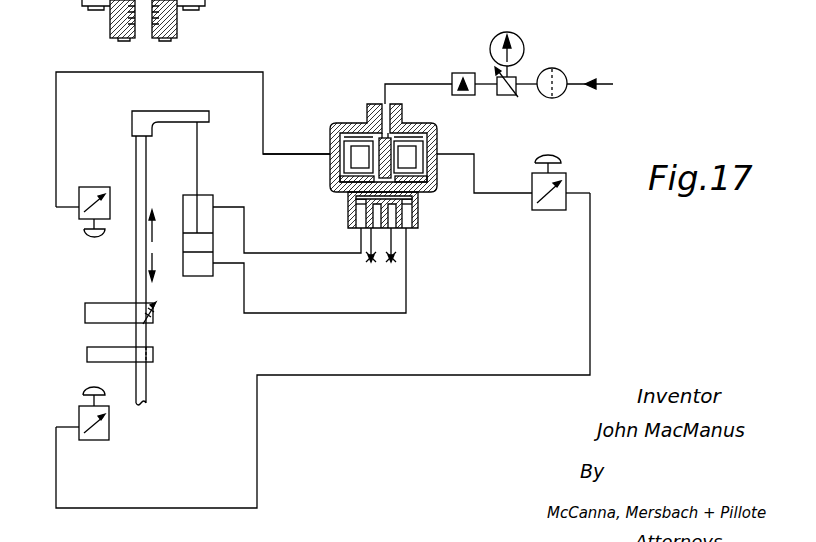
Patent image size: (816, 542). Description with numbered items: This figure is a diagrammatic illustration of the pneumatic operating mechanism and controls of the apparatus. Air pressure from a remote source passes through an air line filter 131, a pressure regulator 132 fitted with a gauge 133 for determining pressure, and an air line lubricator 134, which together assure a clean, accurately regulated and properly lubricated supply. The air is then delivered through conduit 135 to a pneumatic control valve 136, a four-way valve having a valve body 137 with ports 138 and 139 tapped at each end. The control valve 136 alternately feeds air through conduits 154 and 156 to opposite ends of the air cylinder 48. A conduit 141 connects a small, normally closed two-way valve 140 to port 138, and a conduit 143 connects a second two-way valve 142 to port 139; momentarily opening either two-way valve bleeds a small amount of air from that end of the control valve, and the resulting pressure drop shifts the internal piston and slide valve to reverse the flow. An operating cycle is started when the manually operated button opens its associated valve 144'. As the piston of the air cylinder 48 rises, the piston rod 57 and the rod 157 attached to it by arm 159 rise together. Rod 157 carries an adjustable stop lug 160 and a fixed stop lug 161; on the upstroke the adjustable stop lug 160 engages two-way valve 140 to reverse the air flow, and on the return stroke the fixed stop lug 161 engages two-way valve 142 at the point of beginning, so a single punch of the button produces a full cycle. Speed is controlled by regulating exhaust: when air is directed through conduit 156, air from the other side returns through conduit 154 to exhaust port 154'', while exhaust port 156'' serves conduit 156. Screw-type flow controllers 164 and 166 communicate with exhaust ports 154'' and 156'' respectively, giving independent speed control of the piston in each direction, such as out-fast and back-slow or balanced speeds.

The air cylinder 48 is at (192, 277).
The piston rod 57 is at (197, 150).
The air line filter 131 is at (560, 96).
The pressure regulator 132 is at (506, 96).
The gauge 133 is at (518, 36).
The air line lubricator 134 is at (467, 73).
The conduit 135 is at (425, 84).
The pneumatic control valve 136 is at (394, 163).
The valve body 137 is at (349, 123).
The port 138 is at (330, 152).
The port 139 is at (437, 154).
The two-way valve 140 is at (79, 221).
The conduit 141 is at (237, 72).
The two-way valve 142 is at (109, 424).
The conduit 143 is at (257, 437).
The valve 144' is at (551, 200).
The conduit 154 is at (287, 230).
The exhaust port 154'' is at (338, 210).
The conduit 156 is at (309, 283).
The exhaust port 156'' is at (434, 228).
The rod 157 is at (136, 253).
The arm 159 is at (199, 93).
The adjustable stop lug 160 is at (85, 312).
The fixed stop lug 161 is at (87, 356).
The flow controller 164 is at (113, 26).
The flow controller 166 is at (172, 33).